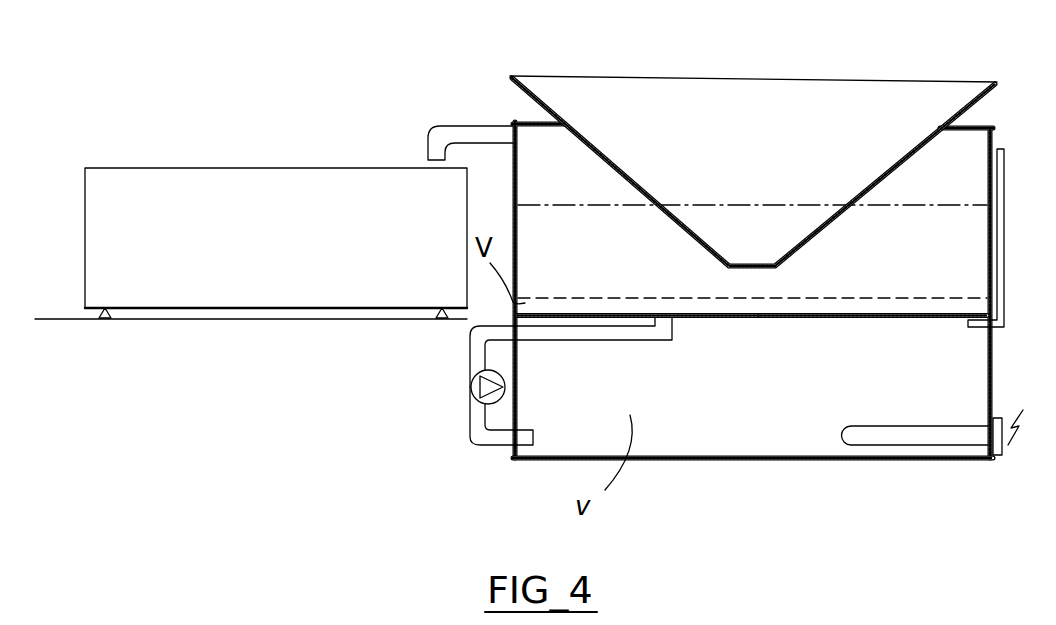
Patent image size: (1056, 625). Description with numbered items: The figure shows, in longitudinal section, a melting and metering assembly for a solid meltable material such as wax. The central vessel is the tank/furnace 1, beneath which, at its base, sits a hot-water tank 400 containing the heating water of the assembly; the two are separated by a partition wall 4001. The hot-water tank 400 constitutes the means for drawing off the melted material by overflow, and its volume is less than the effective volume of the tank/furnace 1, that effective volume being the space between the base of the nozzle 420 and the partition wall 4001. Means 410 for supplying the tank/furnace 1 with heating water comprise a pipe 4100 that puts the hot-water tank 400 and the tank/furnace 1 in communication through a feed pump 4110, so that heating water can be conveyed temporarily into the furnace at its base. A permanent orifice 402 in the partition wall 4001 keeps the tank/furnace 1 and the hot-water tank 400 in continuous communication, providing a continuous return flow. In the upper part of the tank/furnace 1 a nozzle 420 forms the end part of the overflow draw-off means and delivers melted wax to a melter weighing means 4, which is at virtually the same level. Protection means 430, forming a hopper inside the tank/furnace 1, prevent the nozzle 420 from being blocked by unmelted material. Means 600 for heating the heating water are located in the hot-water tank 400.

The tank/furnace 1 is at (972, 150).
The melter weighing means 4 is at (282, 187).
The hot-water tank 400 is at (773, 435).
The partition wall 4001 is at (703, 318).
The permanent orifice 402 is at (877, 318).
The means for supplying the tank/furnace with heating water 410 is at (462, 365).
The pipe 4100 is at (475, 433).
The feed pump 4110 is at (470, 390).
The nozzle 420 is at (455, 125).
The protection means 430 is at (637, 98).
The means for heating the heating water 600 is at (942, 437).